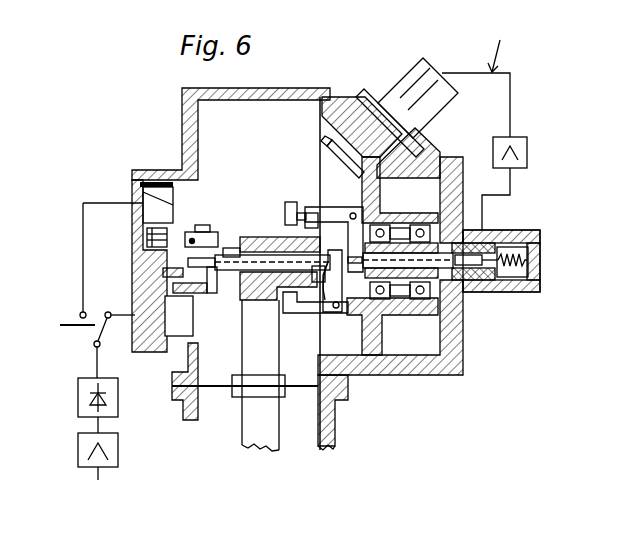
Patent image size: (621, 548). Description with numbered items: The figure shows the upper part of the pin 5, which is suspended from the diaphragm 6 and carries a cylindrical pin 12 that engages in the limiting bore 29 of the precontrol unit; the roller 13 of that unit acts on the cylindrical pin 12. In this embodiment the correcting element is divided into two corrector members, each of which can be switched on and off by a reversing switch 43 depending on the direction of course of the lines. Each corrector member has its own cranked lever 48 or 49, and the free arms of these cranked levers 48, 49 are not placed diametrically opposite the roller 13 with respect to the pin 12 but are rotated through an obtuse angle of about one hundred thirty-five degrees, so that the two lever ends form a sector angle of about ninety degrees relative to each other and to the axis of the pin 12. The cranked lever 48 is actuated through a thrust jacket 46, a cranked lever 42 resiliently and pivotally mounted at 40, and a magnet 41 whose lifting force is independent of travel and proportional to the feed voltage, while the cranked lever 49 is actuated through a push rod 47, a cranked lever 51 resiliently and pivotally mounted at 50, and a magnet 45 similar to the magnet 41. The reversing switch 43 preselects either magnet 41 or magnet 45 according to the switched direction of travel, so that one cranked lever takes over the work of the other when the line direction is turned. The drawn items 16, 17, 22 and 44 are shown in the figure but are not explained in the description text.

The pin 5 is at (265, 360).
The diaphragm 6 is at (296, 388).
The cylindrical pin 12 is at (284, 238).
The roller 13 is at (284, 195).
The sensor 16 is at (407, 88).
The amplifier 17 is at (527, 152).
The spring-loaded plunger housing 22 is at (480, 282).
The limiting bore 29 is at (306, 206).
The pivot mounting 40 is at (193, 239).
The magnet 41 is at (155, 193).
The cranked lever 42 is at (150, 242).
The reversing switch 43 is at (97, 279).
The amplifier 44 is at (118, 445).
The magnet 45 is at (162, 345).
The thrust jacket 46 is at (237, 250).
The push rod 47 is at (252, 288).
The cranked lever 48 is at (338, 313).
The cranked lever 49 is at (291, 305).
The pivot mounting 50 is at (223, 282).
The cranked lever 51 is at (198, 307).